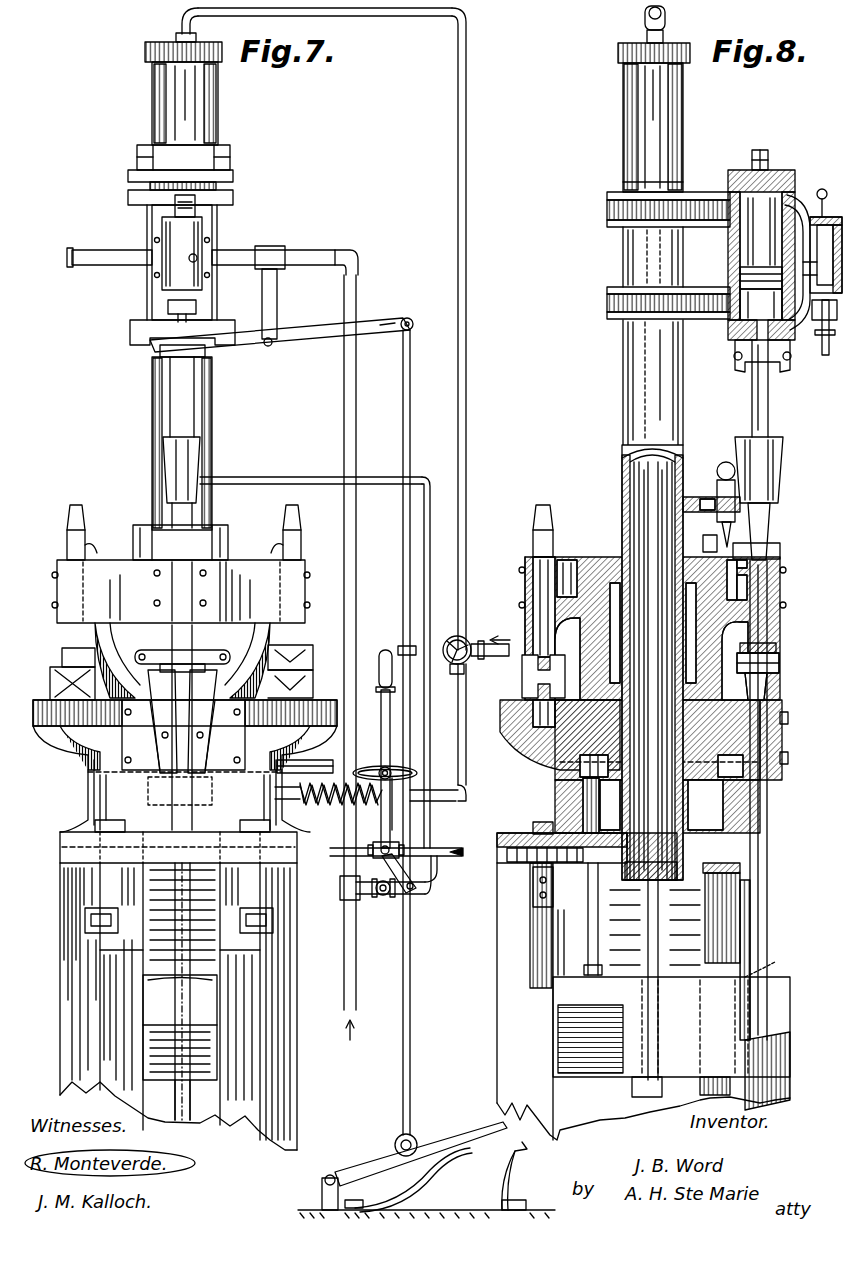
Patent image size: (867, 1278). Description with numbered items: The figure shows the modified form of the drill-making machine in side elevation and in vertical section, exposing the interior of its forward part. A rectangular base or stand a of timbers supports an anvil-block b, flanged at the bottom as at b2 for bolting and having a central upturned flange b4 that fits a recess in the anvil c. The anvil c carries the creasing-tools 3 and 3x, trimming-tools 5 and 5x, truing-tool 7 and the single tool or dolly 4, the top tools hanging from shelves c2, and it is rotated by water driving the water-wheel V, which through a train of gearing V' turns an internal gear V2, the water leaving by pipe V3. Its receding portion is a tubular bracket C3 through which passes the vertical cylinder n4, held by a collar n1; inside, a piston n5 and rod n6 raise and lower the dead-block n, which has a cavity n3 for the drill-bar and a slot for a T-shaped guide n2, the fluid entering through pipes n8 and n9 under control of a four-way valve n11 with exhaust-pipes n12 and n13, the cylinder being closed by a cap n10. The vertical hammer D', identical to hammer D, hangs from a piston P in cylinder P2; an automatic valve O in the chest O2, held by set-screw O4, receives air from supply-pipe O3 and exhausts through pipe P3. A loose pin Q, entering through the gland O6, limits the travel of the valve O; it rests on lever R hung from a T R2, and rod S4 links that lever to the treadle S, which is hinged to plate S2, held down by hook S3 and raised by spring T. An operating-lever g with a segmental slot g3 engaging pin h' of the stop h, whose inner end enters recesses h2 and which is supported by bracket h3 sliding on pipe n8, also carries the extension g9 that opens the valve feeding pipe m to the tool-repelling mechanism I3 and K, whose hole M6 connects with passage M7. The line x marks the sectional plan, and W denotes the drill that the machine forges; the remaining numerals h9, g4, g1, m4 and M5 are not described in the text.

In FIG. 7, the pipe n9 is at (462, 240).
In FIG. 8, the pipe n9 is at (645, 12).
In FIG. 7, the cap or head n10 is at (218, 60).
In FIG. 8, the cap or head n10 is at (618, 58).
In FIG. 7, the cylinder P2 is at (215, 216).
In FIG. 8, the cylinder P2 is at (728, 236).
In FIG. 7, the valve chest or casing O2 is at (172, 283).
In FIG. 8, the valve chest or casing O2 is at (825, 357).
In FIG. 7, the set-screw O4 is at (197, 258).
In FIG. 7, the exhaust-pipe P3 is at (100, 252).
In FIG. 7, the supply-pipe O3 is at (300, 256).
In FIG. 7, the T R2 is at (281, 250).
In FIG. 7, the stuffing-box and gland O6 is at (170, 305).
In FIG. 8, the stuffing-box and gland O6 is at (812, 322).
In FIG. 7, the pin Q is at (170, 326).
In FIG. 8, the pin Q is at (790, 352).
In FIG. 7, the lever R is at (242, 342).
In FIG. 8, the lever R is at (818, 360).
In FIG. 7, the cylinder n4 is at (214, 417).
In FIG. 8, the cylinder n4 is at (615, 420).
In FIG. 7, the vertical hammer D' is at (156, 470).
In FIG. 7, the pipe m is at (293, 480).
In FIG. 8, the pipe m is at (722, 465).
In FIG. 7, the collar n1 is at (214, 540).
In FIG. 8, the collar n1 is at (608, 556).
In FIG. 7, the section line x is at (52, 503).
In FIG. 7, the shelves c2 is at (98, 578).
In FIG. 8, the shelves c2 is at (740, 615).
In FIG. 7, the top trimming-tool 5x is at (66, 656).
In FIG. 7, the bottom trimming-tool 5 is at (50, 690).
In FIG. 7, the top creasing-tool 3x is at (313, 652).
In FIG. 7, the bottom creasing-tool 3 is at (310, 690).
In FIG. 7, the anvil c is at (70, 738).
In FIG. 8, the anvil c is at (556, 763).
In FIG. 7, the recesses h2 is at (90, 772).
In FIG. 8, the recesses h2 is at (560, 772).
In FIG. 7, the anvil-block b is at (92, 790).
In FIG. 8, the anvil-block b is at (740, 845).
In FIG. 7, the lateral flange b2 is at (62, 848).
In FIG. 7, the base or stand a is at (58, 910).
In FIG. 8, the base or stand a is at (497, 955).
In FIG. 7, the dead-block n is at (180, 1047).
In FIG. 8, the dead-block n is at (671, 1043).
In FIG. 7, the cavity n3 is at (218, 978).
In FIG. 8, the cavity n3 is at (768, 978).
In FIG. 7, the T-shaped guide n2 is at (108, 1012).
In FIG. 8, the T-shaped guide n2 is at (740, 912).
In FIG. 7, the stop h is at (305, 761).
In FIG. 7, the bracket h3 is at (296, 804).
In FIG. 7, the spring h9 is at (341, 807).
In FIG. 7, the pin h' is at (385, 757).
In FIG. 7, the operating-lever g is at (379, 673).
In FIG. 7, the segmental slot g3 is at (394, 770).
In FIG. 7, the exhaust-pipe n13 is at (402, 647).
In FIG. 7, the pivot g4 is at (400, 808).
In FIG. 7, the pipe n8 is at (445, 802).
In FIG. 7, the four-way valve n11 is at (460, 676).
In FIG. 7, the exhaust-pipe n12 is at (495, 660).
In FIG. 7, the extension or supplemental lever g9 is at (410, 895).
In FIG. 7, the cock g1 is at (382, 897).
In FIG. 7, the rod S4 is at (411, 1058).
In FIG. 7, the treadle or pedal S is at (472, 1140).
In FIG. 7, the spring T is at (405, 1182).
In FIG. 7, the board or plate S2 is at (456, 1210).
In FIG. 7, the snap or spring hook S3 is at (520, 1165).
In FIG. 8, the piston n5 is at (642, 237).
In FIG. 8, the piston P is at (728, 284).
In FIG. 8, the automatic valve O is at (822, 233).
In FIG. 8, the rod n6 is at (634, 478).
In FIG. 8, the vertical hammer D is at (773, 498).
In FIG. 8, the fitting m4 is at (716, 500).
In FIG. 8, the needle M5 is at (732, 535).
In FIG. 8, the tool-repelling mechanism K is at (780, 548).
In FIG. 8, the tubular bracket C3 is at (610, 570).
In FIG. 8, the tool-repelling mechanism I3 is at (745, 580).
In FIG. 8, the hole M6 is at (757, 596).
In FIG. 8, the passage M7 is at (765, 606).
In FIG. 8, the single tool or dolly 4 is at (780, 666).
In FIG. 8, the truing-tool 7 is at (522, 692).
In FIG. 8, the central flange b4 is at (545, 748).
In FIG. 8, the internal gear V2 is at (583, 787).
In FIG. 8, the train of gearing V' is at (526, 818).
In FIG. 8, the water-wheel V is at (587, 870).
In FIG. 8, the pipe V3 is at (580, 919).
In FIG. 8, the drill W is at (769, 871).